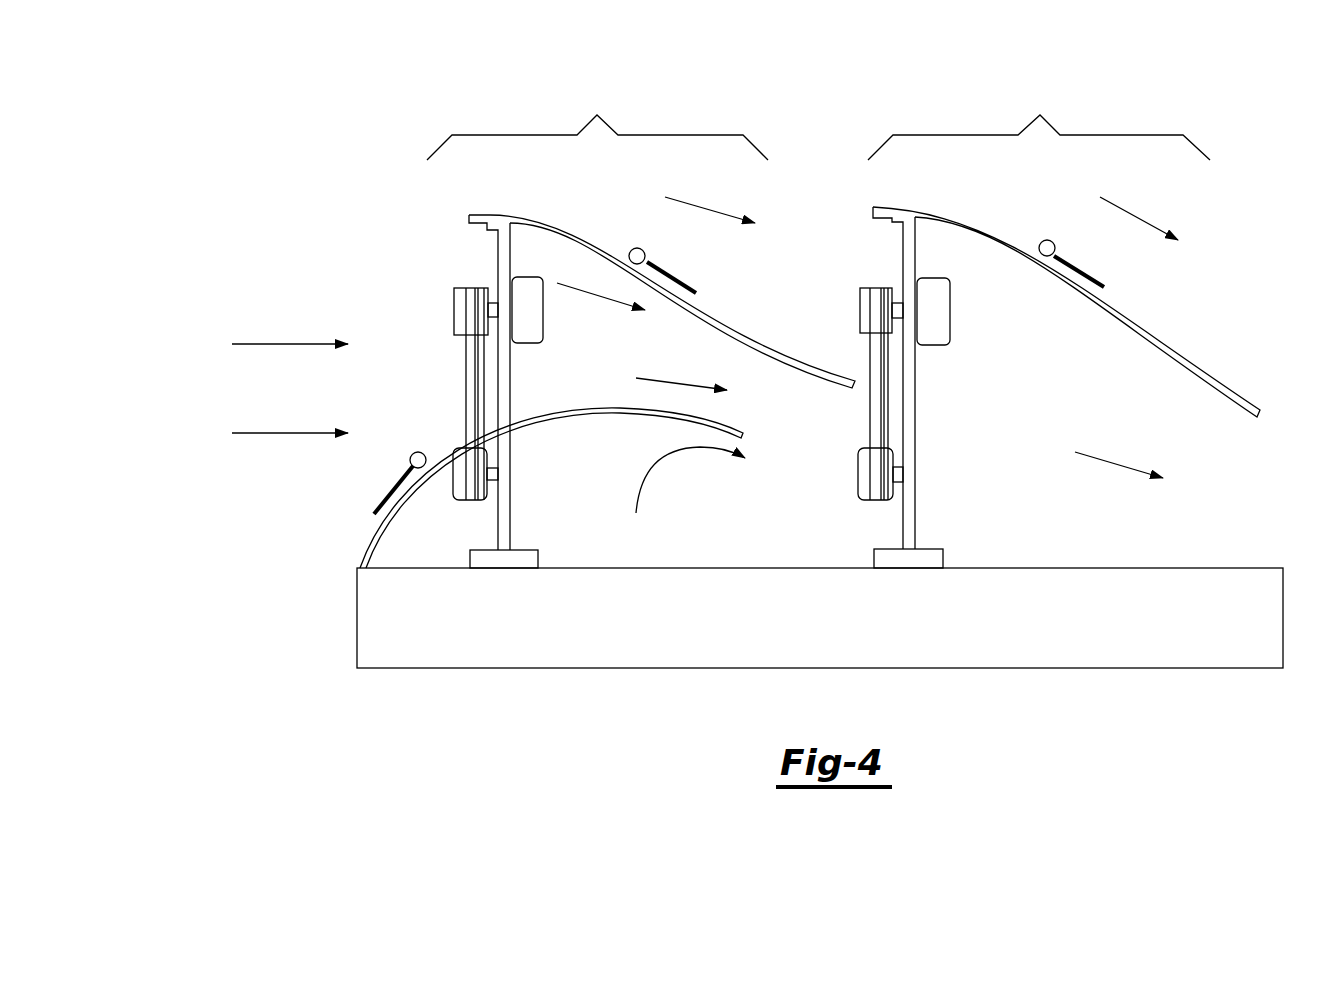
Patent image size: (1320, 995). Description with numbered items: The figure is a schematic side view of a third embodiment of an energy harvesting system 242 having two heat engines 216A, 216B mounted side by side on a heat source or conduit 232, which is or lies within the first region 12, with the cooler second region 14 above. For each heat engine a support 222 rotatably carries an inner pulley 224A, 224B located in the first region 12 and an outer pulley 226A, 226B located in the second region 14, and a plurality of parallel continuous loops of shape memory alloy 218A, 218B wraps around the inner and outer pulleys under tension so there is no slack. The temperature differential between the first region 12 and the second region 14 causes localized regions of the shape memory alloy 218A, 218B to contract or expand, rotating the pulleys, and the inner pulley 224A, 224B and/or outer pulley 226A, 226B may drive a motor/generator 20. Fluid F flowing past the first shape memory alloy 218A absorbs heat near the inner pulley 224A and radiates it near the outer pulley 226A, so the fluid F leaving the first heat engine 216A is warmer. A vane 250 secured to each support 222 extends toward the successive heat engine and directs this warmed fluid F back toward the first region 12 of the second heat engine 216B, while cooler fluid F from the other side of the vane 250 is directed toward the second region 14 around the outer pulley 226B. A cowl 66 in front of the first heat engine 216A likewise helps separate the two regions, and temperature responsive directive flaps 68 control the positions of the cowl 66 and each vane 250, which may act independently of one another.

The energy harvesting system 242 is at (320, 112).
The first heat engine 216A is at (597, 125).
The second heat engine 216B is at (1039, 125).
The vane 250 is at (538, 221).
The temperature responsive directive flap 68 is at (392, 492).
The second region 14 is at (835, 263).
The motor/generator 20 is at (543, 313).
The outer pulley of first heat engine 226A is at (452, 311).
The outer pulley of second heat engine 226B is at (858, 312).
The shape memory alloy of first heat engine 218A is at (470, 392).
The shape memory alloy of second heat engine 218B is at (876, 413).
The inner pulley of first heat engine 224A is at (453, 478).
The inner pulley of second heat engine 224B is at (858, 476).
The support 222 is at (512, 512).
The cowl 66 is at (370, 538).
The conduit 232 is at (831, 632).
The first region 12 is at (790, 525).
The fluid F is at (282, 343).